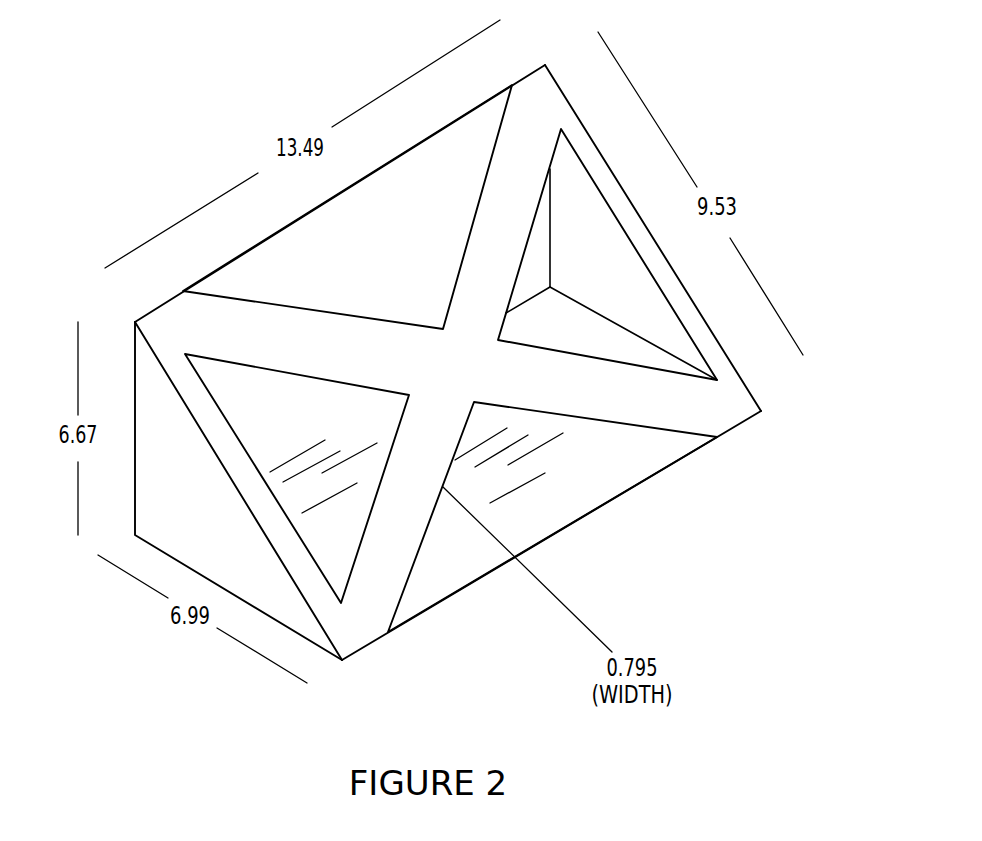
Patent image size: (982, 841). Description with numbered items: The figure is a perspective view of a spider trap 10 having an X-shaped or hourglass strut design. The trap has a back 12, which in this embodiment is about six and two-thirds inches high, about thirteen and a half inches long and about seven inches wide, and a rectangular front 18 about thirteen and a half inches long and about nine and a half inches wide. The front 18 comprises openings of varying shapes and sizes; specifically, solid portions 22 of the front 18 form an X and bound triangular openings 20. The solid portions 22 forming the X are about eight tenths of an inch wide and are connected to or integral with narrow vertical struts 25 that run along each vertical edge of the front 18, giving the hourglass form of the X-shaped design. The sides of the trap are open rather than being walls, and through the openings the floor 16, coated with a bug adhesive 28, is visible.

The spider trap 10 is at (701, 34).
The back 12 is at (150, 482).
The floor 16 is at (592, 488).
The front 18 is at (727, 405).
The triangular openings 20 is at (308, 232).
The solid portion 22 is at (395, 583).
The narrow vertical struts 25 is at (660, 267).
The bug adhesive 28 is at (535, 457).